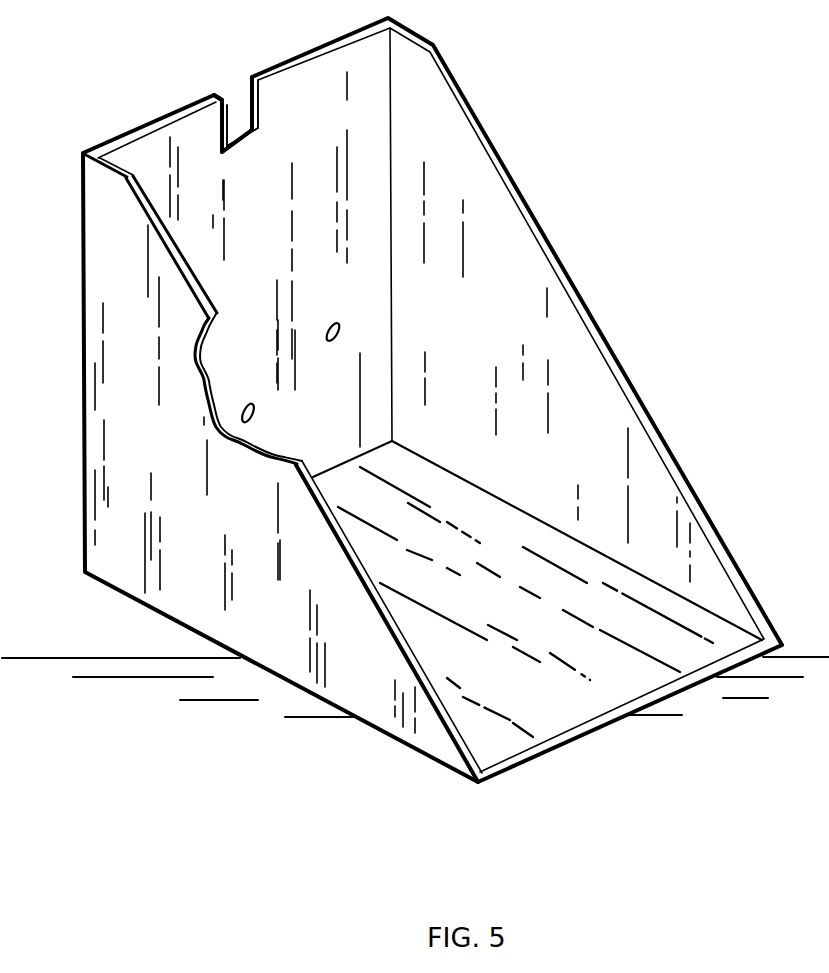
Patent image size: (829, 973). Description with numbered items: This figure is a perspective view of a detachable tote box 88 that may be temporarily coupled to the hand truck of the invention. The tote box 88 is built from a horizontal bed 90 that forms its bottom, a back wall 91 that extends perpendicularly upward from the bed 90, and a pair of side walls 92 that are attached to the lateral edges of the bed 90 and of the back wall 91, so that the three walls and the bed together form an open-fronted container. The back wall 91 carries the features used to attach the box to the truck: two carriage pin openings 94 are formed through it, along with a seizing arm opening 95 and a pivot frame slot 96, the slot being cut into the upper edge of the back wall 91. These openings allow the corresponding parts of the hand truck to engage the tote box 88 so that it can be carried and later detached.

The tote box 88 is at (563, 243).
The horizontal bed 90 is at (539, 699).
The back wall 91 is at (324, 110).
The side walls 92 is at (510, 282).
The carriage pin openings 94 is at (339, 323).
The seizing arm opening 95 is at (255, 410).
The pivot frame slot 96 is at (236, 112).